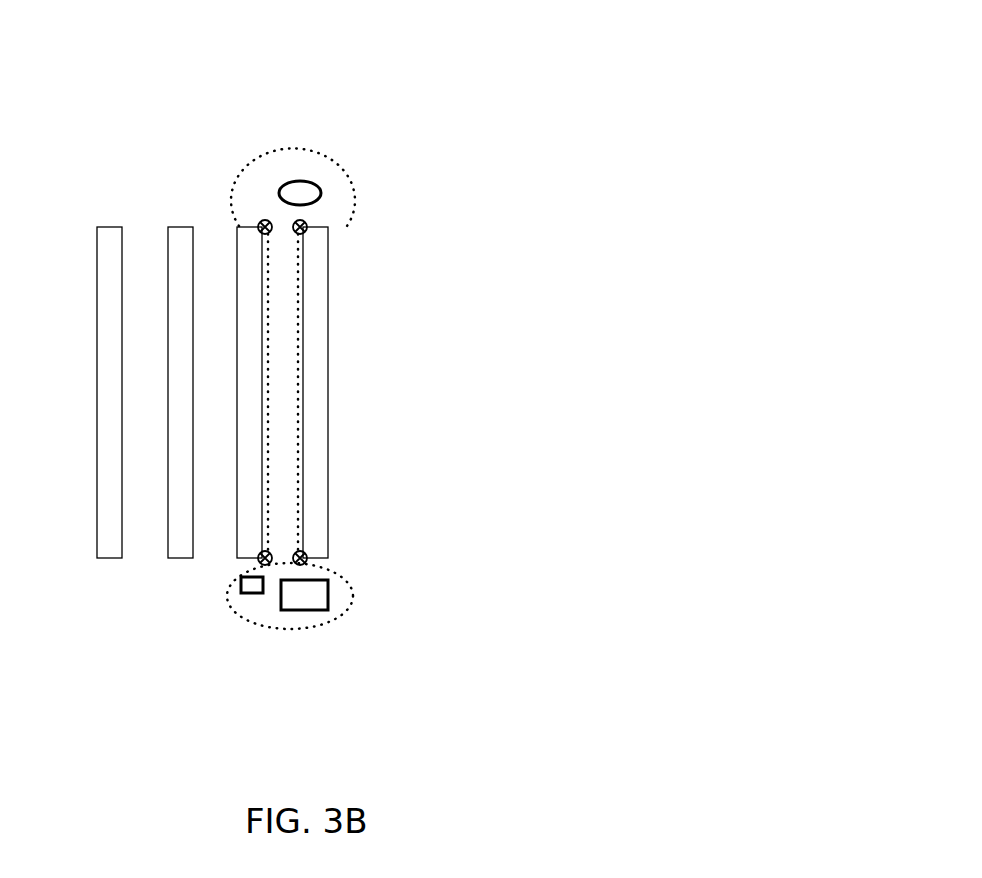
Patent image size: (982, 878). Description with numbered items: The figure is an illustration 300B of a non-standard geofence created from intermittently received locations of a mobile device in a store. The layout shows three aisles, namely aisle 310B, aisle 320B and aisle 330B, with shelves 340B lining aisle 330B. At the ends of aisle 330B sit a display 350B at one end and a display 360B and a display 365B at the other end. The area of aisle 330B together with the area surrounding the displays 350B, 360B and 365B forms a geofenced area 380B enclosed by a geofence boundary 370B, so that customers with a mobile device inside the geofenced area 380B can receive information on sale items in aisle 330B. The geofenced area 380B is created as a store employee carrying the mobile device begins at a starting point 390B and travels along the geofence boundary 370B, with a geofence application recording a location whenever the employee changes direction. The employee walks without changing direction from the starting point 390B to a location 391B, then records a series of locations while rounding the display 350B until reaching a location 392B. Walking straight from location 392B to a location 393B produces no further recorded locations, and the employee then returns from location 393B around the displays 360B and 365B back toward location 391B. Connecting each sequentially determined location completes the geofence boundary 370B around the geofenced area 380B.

The illustration 300B is at (490, 54).
The aisle 310B is at (146, 245).
The aisle 320B is at (216, 245).
The aisle 330B is at (287, 293).
The shelves 340B is at (320, 372).
The display 350B is at (318, 182).
The display 360B is at (258, 581).
The display 365B is at (320, 603).
The geofence boundary 370B is at (355, 603).
The geofenced area 380B is at (295, 447).
The starting point 390B is at (307, 556).
The location 391B is at (307, 223).
The location 392B is at (272, 224).
The location 393B is at (259, 565).